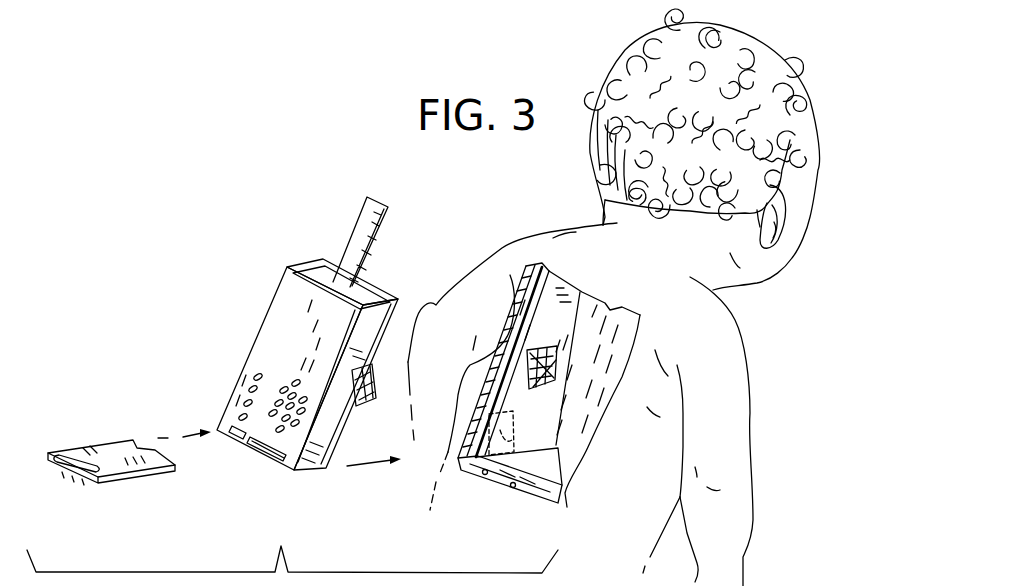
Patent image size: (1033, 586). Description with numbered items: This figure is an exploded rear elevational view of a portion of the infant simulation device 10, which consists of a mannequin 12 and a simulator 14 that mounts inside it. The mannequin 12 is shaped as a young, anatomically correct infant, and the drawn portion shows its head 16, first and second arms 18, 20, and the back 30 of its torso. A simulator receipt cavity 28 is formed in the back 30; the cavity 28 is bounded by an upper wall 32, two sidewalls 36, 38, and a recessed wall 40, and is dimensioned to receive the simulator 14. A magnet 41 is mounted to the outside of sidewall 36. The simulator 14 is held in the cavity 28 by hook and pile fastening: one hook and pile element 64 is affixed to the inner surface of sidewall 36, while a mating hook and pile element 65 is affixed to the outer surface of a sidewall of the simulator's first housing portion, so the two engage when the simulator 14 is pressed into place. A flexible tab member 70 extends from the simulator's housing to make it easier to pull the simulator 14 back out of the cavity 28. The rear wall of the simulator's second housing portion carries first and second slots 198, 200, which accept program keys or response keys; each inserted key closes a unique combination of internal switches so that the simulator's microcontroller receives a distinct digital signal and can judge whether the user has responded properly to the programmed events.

The infant simulation device 10 is at (152, 164).
The mannequin 12 is at (660, 28).
The simulator 14 is at (272, 355).
The head 16 is at (770, 91).
The first arm 18 is at (447, 302).
The second arm 20 is at (735, 465).
The simulator receipt cavity 28 is at (625, 346).
The back 30 is at (578, 242).
The upper wall 32 is at (620, 304).
The sidewall 36 is at (532, 318).
The sidewall 38 is at (567, 480).
The recessed wall 40 is at (592, 388).
The magnet 41 is at (487, 470).
The hook and pile element 64 is at (527, 370).
The hook and pile element 65 is at (362, 392).
The flexible tab member 70 is at (350, 243).
The first slot 198 is at (270, 456).
The second slot 200 is at (217, 425).